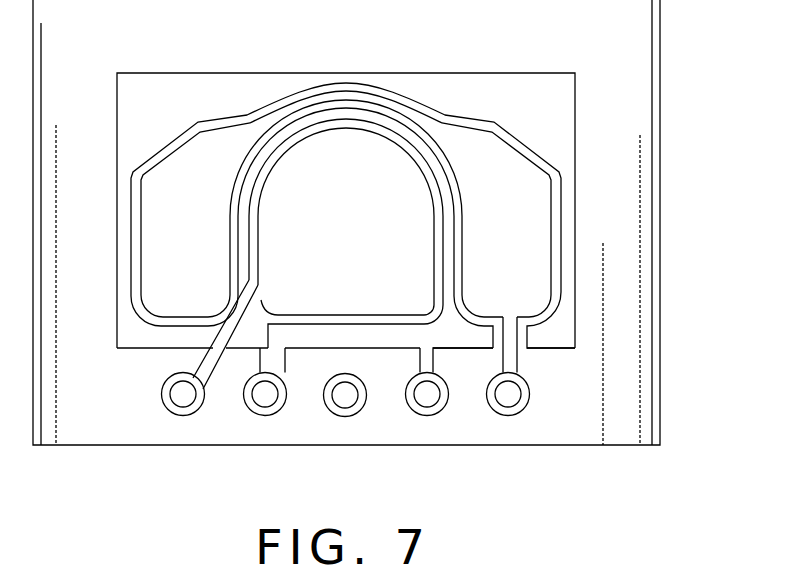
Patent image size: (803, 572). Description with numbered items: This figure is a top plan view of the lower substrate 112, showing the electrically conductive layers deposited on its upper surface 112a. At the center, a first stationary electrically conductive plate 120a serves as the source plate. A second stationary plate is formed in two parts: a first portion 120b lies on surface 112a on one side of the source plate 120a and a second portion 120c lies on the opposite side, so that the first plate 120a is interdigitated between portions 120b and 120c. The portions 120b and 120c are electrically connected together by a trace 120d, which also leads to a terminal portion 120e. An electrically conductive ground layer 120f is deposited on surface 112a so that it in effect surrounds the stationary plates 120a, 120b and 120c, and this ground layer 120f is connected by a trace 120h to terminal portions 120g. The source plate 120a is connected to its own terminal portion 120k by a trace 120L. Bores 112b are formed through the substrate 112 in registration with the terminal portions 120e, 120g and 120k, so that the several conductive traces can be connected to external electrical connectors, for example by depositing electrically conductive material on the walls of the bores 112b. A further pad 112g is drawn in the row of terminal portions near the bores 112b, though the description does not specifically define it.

The lower substrate 112 is at (660, 212).
The upper surface 112a is at (618, 185).
The bores 112b is at (194, 403).
The connection pad 112g is at (269, 410).
The first stationary electrically conductive plate 120a is at (365, 247).
The first portion of second stationary plate 120b is at (207, 247).
The second portion of second stationary plate 120c is at (533, 249).
The trace 120d is at (338, 93).
The terminal portion 120e is at (526, 405).
The ground layer 120f is at (551, 117).
The terminal portions 120g is at (424, 410).
The trace 120h is at (278, 360).
The terminal portion 120k is at (184, 399).
The trace 120L is at (228, 353).